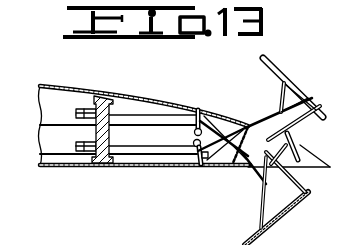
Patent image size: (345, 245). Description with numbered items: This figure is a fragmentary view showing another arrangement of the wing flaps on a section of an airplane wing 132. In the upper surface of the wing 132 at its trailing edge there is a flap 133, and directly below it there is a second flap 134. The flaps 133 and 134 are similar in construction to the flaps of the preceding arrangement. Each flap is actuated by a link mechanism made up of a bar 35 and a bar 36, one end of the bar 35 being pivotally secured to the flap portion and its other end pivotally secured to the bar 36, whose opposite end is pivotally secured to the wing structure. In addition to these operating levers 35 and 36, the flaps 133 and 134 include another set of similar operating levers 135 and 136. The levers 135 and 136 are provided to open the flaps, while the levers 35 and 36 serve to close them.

The airplane wing 132 is at (84, 87).
The flap 133 is at (283, 72).
The flap 134 is at (264, 238).
The operating lever 135 is at (281, 90).
The operating lever 136 is at (275, 113).
The bar 35 is at (308, 105).
The bar 36 is at (297, 143).